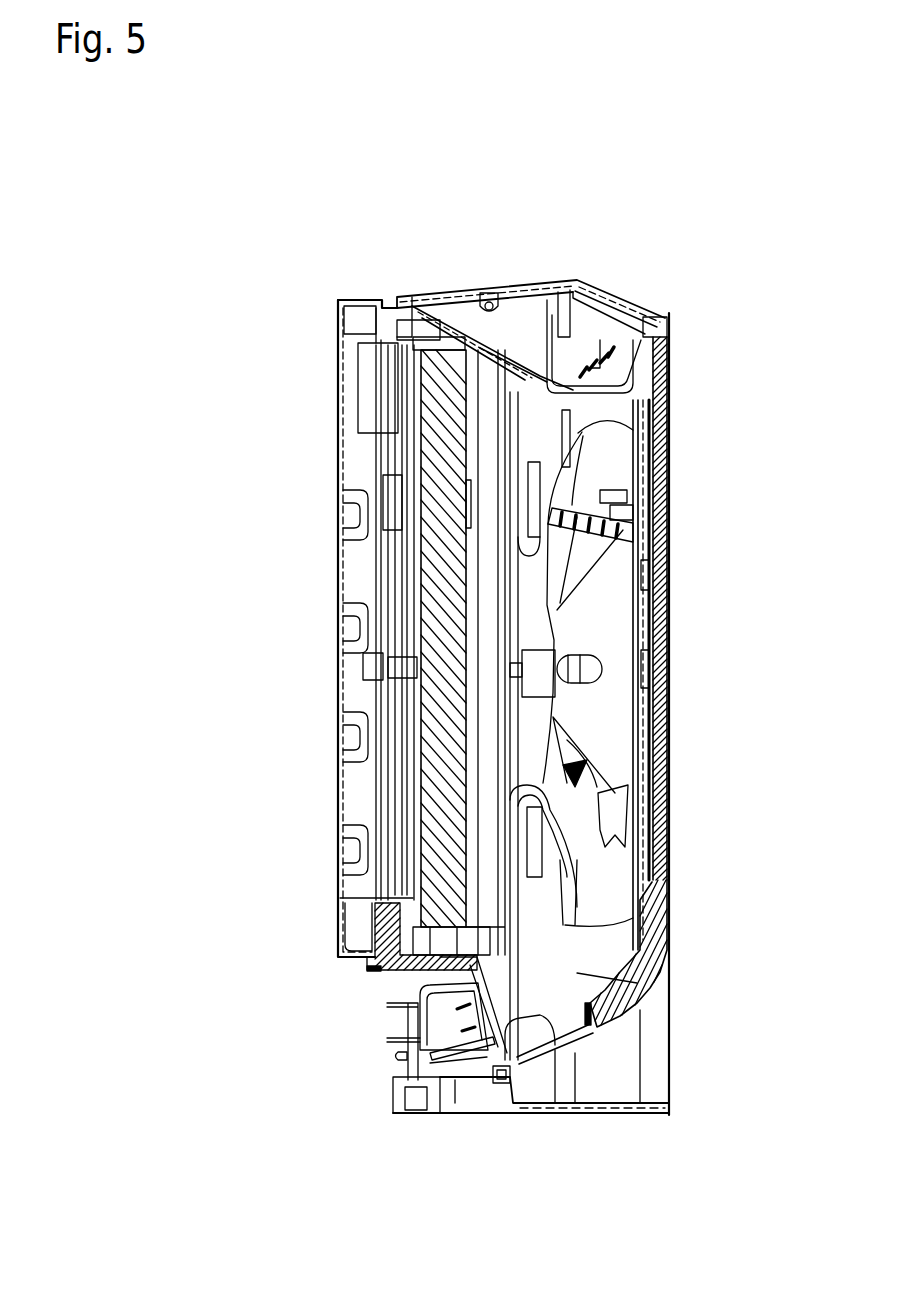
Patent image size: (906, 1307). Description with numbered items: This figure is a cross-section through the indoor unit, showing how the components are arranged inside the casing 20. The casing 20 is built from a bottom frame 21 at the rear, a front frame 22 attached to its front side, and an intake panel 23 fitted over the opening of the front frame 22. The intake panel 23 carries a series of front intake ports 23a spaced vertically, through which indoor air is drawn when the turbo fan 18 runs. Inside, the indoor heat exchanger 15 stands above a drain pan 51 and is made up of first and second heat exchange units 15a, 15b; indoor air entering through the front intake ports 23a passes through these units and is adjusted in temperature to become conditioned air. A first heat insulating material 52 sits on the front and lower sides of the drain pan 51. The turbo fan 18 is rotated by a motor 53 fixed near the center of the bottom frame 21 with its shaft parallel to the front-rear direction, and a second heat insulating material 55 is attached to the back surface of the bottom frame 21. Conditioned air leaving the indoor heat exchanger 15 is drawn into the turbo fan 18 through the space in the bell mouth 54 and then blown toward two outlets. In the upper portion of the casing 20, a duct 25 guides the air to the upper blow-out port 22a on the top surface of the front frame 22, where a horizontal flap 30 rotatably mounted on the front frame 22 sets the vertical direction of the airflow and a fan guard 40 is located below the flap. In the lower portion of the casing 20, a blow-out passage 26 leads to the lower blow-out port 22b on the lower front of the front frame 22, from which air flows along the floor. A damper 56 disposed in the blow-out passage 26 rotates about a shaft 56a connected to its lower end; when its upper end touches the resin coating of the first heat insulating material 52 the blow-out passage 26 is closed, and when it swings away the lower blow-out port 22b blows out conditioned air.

The indoor heat exchanger 15 is at (324, 646).
The first heat exchange unit 15a is at (420, 742).
The second heat exchange unit 15b is at (447, 790).
The turbo fan 18 is at (622, 703).
The casing 20 is at (656, 311).
The bottom frame 21 is at (610, 295).
The front frame 22 is at (400, 310).
The upper blow-out port 22a is at (547, 288).
The lower blow-out port 22b is at (397, 1022).
The intake panel 23 is at (340, 571).
The front intake port 23a is at (342, 630).
The duct 25 is at (457, 295).
The blow-out passage 26 is at (642, 980).
The horizontal flap 30 is at (492, 289).
The fan guard 40 is at (527, 318).
The drain pan 51 is at (385, 930).
The first heat insulating material 52 is at (385, 966).
The motor 53 is at (600, 670).
The bell mouth 54 is at (520, 473).
The second heat insulating material 55 is at (668, 527).
The damper 56 is at (530, 1075).
The shaft 56a is at (490, 1067).